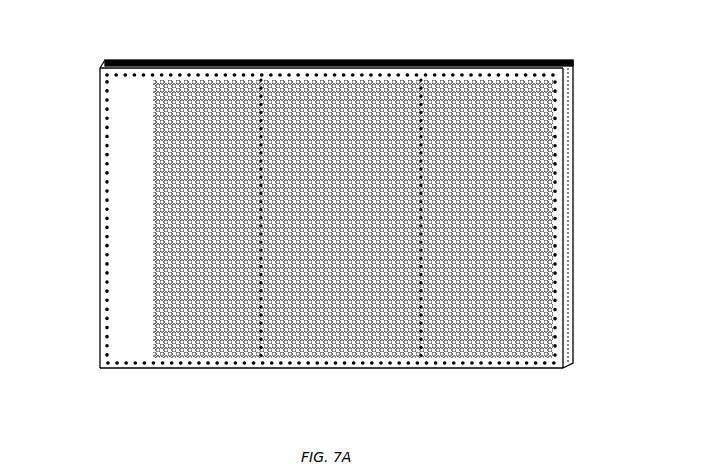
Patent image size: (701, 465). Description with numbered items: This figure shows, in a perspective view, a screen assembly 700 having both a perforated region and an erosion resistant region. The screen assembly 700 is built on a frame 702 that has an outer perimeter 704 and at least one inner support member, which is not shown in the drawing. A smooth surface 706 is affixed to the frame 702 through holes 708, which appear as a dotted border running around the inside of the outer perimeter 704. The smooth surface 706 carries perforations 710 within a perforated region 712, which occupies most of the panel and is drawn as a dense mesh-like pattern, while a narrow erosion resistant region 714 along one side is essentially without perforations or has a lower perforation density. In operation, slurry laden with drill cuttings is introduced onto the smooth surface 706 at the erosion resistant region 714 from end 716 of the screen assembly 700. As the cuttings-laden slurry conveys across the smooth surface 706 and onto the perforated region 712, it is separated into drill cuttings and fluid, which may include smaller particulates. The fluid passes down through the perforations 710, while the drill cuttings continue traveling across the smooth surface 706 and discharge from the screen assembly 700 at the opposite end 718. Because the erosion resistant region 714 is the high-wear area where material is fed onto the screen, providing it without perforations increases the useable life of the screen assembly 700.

The screen assembly 700 is at (352, 25).
The frame 702 is at (497, 50).
The outer perimeter 704 is at (565, 112).
The smooth surface 706 is at (540, 240).
The holes 708 is at (553, 160).
The perforations 710 is at (540, 205).
The perforated region 712 is at (545, 367).
The erosion resistant region 714 is at (147, 366).
The end 716 is at (92, 200).
The end 718 is at (555, 303).